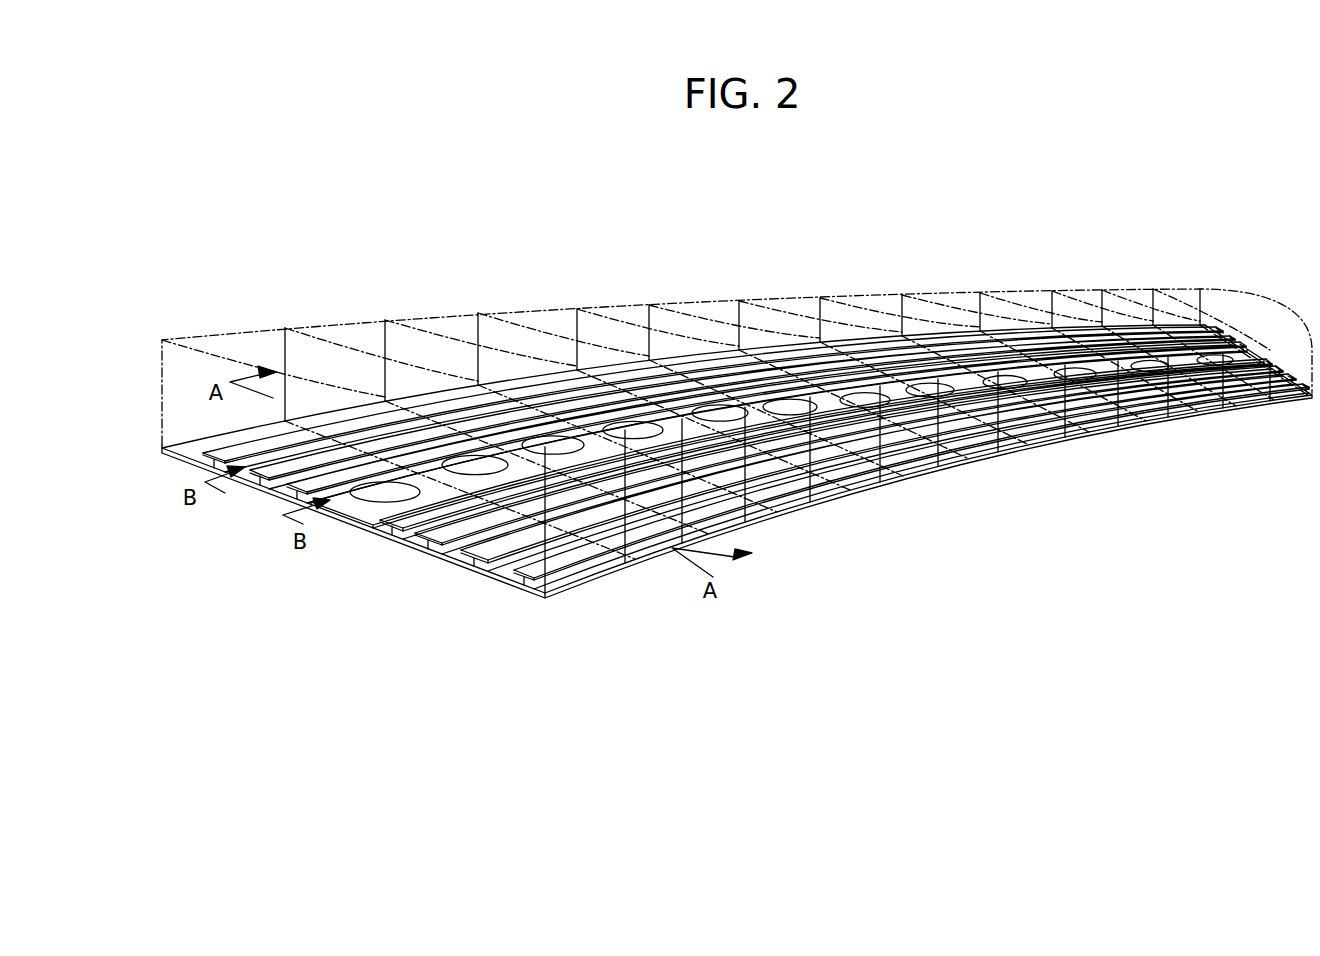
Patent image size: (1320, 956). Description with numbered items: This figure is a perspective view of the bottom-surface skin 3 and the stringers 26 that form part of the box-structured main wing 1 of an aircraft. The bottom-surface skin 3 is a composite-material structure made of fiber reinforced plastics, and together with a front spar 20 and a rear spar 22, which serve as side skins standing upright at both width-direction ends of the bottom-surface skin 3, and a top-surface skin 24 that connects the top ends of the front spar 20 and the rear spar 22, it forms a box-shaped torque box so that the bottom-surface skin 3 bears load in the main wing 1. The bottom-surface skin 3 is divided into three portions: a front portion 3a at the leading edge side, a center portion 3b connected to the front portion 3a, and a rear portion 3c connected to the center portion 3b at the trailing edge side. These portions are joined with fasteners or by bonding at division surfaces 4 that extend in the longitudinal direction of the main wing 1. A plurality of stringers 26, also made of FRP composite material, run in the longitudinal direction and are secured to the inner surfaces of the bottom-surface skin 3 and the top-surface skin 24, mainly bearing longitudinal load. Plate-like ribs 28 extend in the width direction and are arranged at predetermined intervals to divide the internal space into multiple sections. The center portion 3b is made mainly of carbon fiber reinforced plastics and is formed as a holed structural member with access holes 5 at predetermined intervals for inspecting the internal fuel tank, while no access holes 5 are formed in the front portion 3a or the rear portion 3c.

The main wing 1 is at (610, 252).
The bottom-surface skin 3 is at (252, 615).
The front portion 3a is at (168, 454).
The center portion 3b is at (372, 518).
The rear portion 3c is at (480, 574).
The division surfaces 4 is at (282, 500).
The access holes 5 is at (388, 497).
The front spar 20 is at (160, 376).
The rear spar 22 is at (602, 570).
The top-surface skin 24 is at (257, 337).
The stringers 26 is at (400, 522).
The ribs 28 is at (338, 343).